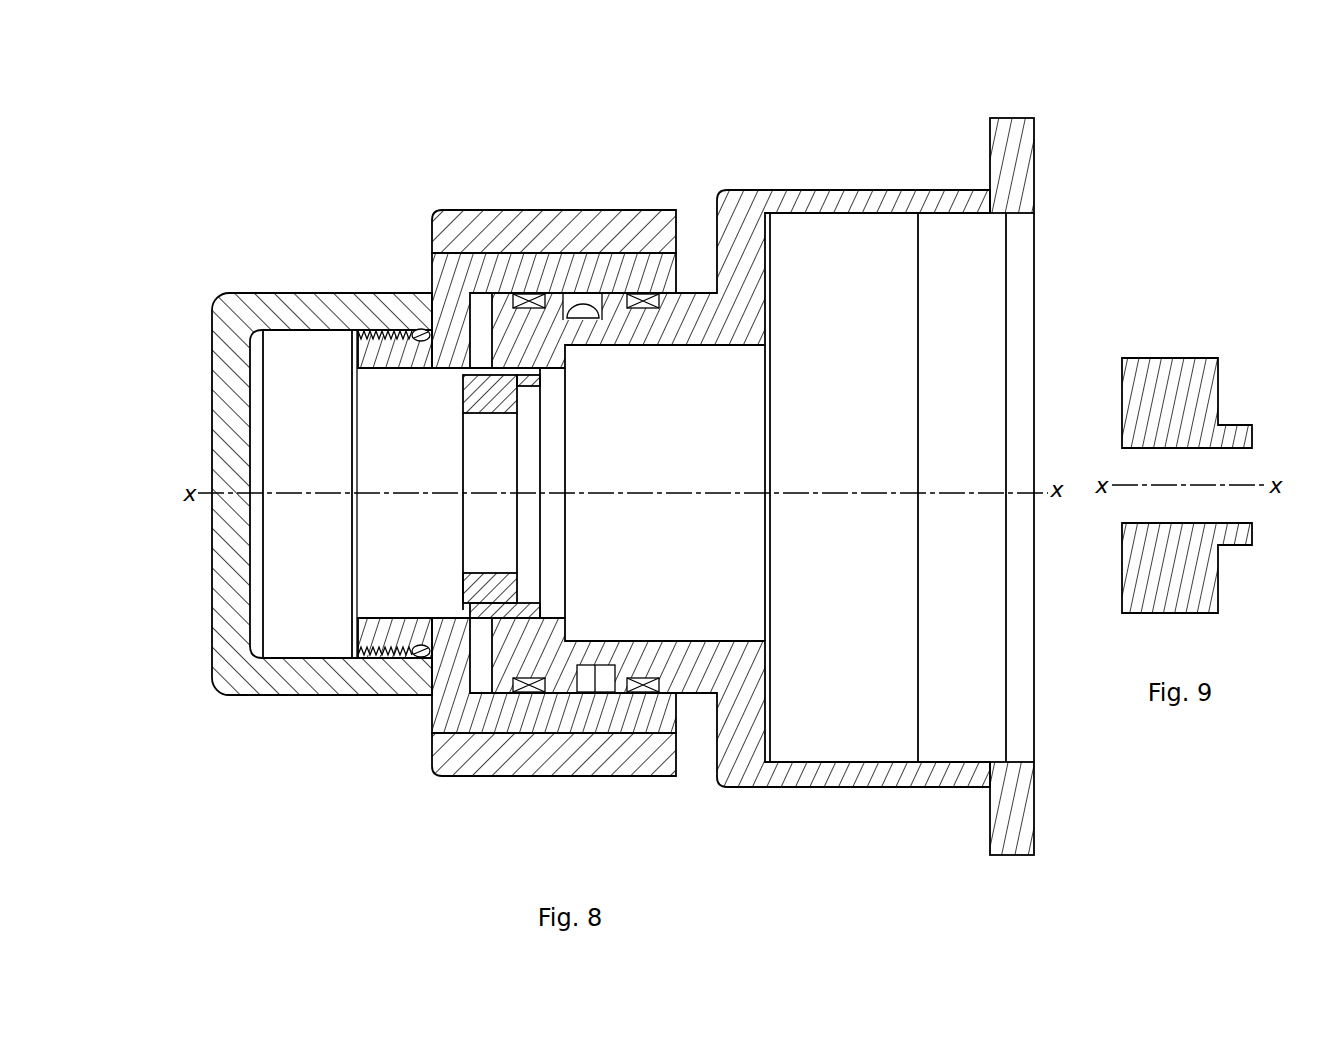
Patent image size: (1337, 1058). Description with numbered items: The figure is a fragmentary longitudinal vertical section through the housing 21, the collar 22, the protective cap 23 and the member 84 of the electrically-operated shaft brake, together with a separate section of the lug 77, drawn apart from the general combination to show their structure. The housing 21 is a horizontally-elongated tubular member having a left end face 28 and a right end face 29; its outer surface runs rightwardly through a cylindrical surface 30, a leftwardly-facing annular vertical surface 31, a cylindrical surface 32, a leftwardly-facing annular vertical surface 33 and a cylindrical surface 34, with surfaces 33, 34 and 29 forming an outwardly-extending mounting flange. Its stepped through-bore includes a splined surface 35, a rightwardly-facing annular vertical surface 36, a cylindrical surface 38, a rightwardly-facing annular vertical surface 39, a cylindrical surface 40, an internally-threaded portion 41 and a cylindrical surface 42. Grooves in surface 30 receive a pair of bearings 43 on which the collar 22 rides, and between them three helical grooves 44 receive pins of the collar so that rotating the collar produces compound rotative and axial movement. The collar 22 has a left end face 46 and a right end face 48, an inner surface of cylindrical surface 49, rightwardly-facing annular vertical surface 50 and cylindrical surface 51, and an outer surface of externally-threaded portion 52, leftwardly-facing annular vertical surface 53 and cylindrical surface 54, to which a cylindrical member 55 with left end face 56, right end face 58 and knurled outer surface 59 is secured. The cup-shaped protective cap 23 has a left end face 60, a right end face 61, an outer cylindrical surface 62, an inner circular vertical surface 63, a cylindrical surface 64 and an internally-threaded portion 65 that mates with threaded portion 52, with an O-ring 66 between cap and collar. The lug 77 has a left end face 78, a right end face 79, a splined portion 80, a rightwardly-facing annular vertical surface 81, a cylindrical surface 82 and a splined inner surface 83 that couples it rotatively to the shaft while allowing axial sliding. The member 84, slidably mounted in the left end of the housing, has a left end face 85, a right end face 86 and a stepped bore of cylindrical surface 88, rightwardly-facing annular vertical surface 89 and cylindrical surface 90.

In FIG. 8, the housing 21 is at (1015, 458).
In FIG. 8, the collar 22 is at (537, 502).
In FIG. 8, the protective cap 23 is at (286, 463).
In FIG. 8, the left end face 28 is at (517, 475).
In FIG. 8, the right end face 29 is at (1011, 458).
In FIG. 8, the horizontal cylindrical surface 30 is at (741, 515).
In FIG. 8, the leftwardly-facing annular vertical surface 31 is at (741, 490).
In FIG. 8, the horizontal cylindrical surface 32 is at (741, 490).
In FIG. 8, the leftwardly-facing annular vertical surface 33 is at (996, 458).
In FIG. 8, the horizontal cylindrical surface 34 is at (1006, 458).
In FIG. 8, the splined surface 35 is at (741, 515).
In FIG. 8, the rightwardly-facing annular vertical surface 36 is at (741, 515).
In FIG. 8, the horizontal cylindrical surface 38 is at (741, 488).
In FIG. 8, the rightwardly-facing annular vertical surface 39 is at (741, 488).
In FIG. 8, the horizontal cylindrical surface 40 is at (876, 487).
In FIG. 8, the internally-threaded portion 41 is at (934, 216).
In FIG. 8, the horizontal cylindrical surface 42 is at (1012, 216).
In FIG. 8, the bearings 43 is at (527, 290).
In FIG. 8, the helical grooves 44 is at (578, 300).
In FIG. 8, the left end face 46 is at (355, 543).
In FIG. 8, the right end face 48 is at (545, 539).
In FIG. 8, the horizontal cylindrical surface 49 is at (421, 618).
In FIG. 8, the rightwardly-facing annular vertical surface 50 is at (515, 599).
In FIG. 8, the horizontal cylindrical surface 51 is at (673, 678).
In FIG. 8, the externally-threaded portion 52 is at (396, 326).
In FIG. 8, the leftwardly-facing annular vertical surface 53 is at (520, 494).
In FIG. 8, the horizontal cylindrical surface 54 is at (537, 515).
In FIG. 8, the cylindrical member 55 is at (537, 515).
In FIG. 8, the left end face 56 is at (537, 515).
In FIG. 8, the right end face 58 is at (545, 515).
In FIG. 8, the knurled outer surface 59 is at (545, 539).
In FIG. 8, the left end face 60 is at (286, 468).
In FIG. 8, the right end face 61 is at (464, 704).
In FIG. 8, the outer cylindrical surface 62 is at (322, 468).
In FIG. 8, the rightwardly-facing circular vertical surface 63 is at (255, 585).
In FIG. 8, the horizontal cylindrical surface 64 is at (327, 337).
In FIG. 8, the internally-threaded portion 65 is at (367, 543).
In FIG. 8, the O-ring 66 is at (428, 656).
In FIG. 9, the lug 77 is at (1191, 447).
In FIG. 9, the left end face 78 is at (1191, 459).
In FIG. 9, the right end face 79 is at (1220, 485).
In FIG. 9, the splined portion 80 is at (1220, 459).
In FIG. 9, the rightwardly-facing annular vertical surface 81 is at (1220, 484).
In FIG. 9, the horizontal cylindrical surface 82 is at (1203, 485).
In FIG. 9, the splined inner surface 83 is at (1155, 521).
In FIG. 8, the member 84 is at (511, 492).
In FIG. 8, the left end face 85 is at (456, 492).
In FIG. 8, the right end face 86 is at (544, 466).
In FIG. 8, the cylindrical surface 88 is at (466, 421).
In FIG. 8, the rightwardly-facing annular vertical surface 89 is at (522, 581).
In FIG. 8, the horizontal cylindrical surface 90 is at (522, 378).